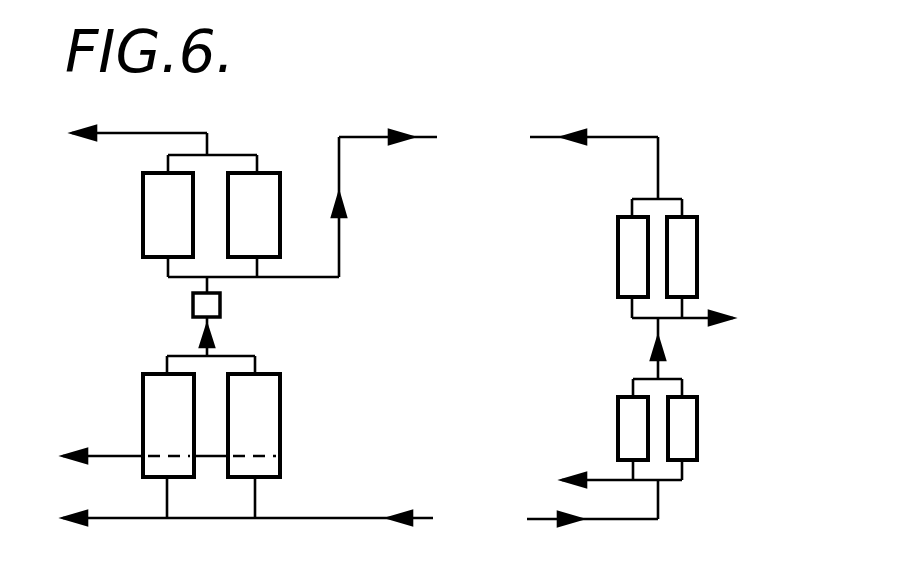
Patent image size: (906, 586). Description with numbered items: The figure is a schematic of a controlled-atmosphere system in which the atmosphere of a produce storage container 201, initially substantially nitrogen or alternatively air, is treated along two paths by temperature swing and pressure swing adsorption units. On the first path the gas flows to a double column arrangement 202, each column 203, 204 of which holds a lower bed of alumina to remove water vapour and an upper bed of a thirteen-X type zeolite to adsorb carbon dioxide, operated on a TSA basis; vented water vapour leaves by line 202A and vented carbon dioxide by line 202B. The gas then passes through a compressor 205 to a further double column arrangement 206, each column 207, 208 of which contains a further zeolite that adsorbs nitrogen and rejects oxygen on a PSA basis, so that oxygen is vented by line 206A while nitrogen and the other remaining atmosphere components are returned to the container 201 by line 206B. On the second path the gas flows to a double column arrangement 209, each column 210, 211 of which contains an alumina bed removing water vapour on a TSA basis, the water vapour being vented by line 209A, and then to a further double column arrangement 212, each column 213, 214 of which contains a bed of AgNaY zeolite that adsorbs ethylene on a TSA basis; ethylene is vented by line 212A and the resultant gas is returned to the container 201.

The container 201 is at (360, 330).
The double column arrangement 202 is at (217, 428).
The line 202A is at (85, 535).
The line 202B is at (160, 439).
The column 203 is at (150, 400).
The column 204 is at (260, 438).
The compressor 205 is at (193, 306).
The double column arrangement 206 is at (195, 202).
The line 206A is at (138, 116).
The line 206B is at (382, 207).
The column 207 is at (150, 228).
The column 208 is at (273, 188).
The double column arrangement 209 is at (654, 416).
The line 209A is at (551, 479).
The column 210 is at (630, 418).
The column 211 is at (748, 478).
The double column arrangement 212 is at (661, 232).
The line 212A is at (748, 322).
The column 213 is at (628, 265).
The column 214 is at (683, 283).